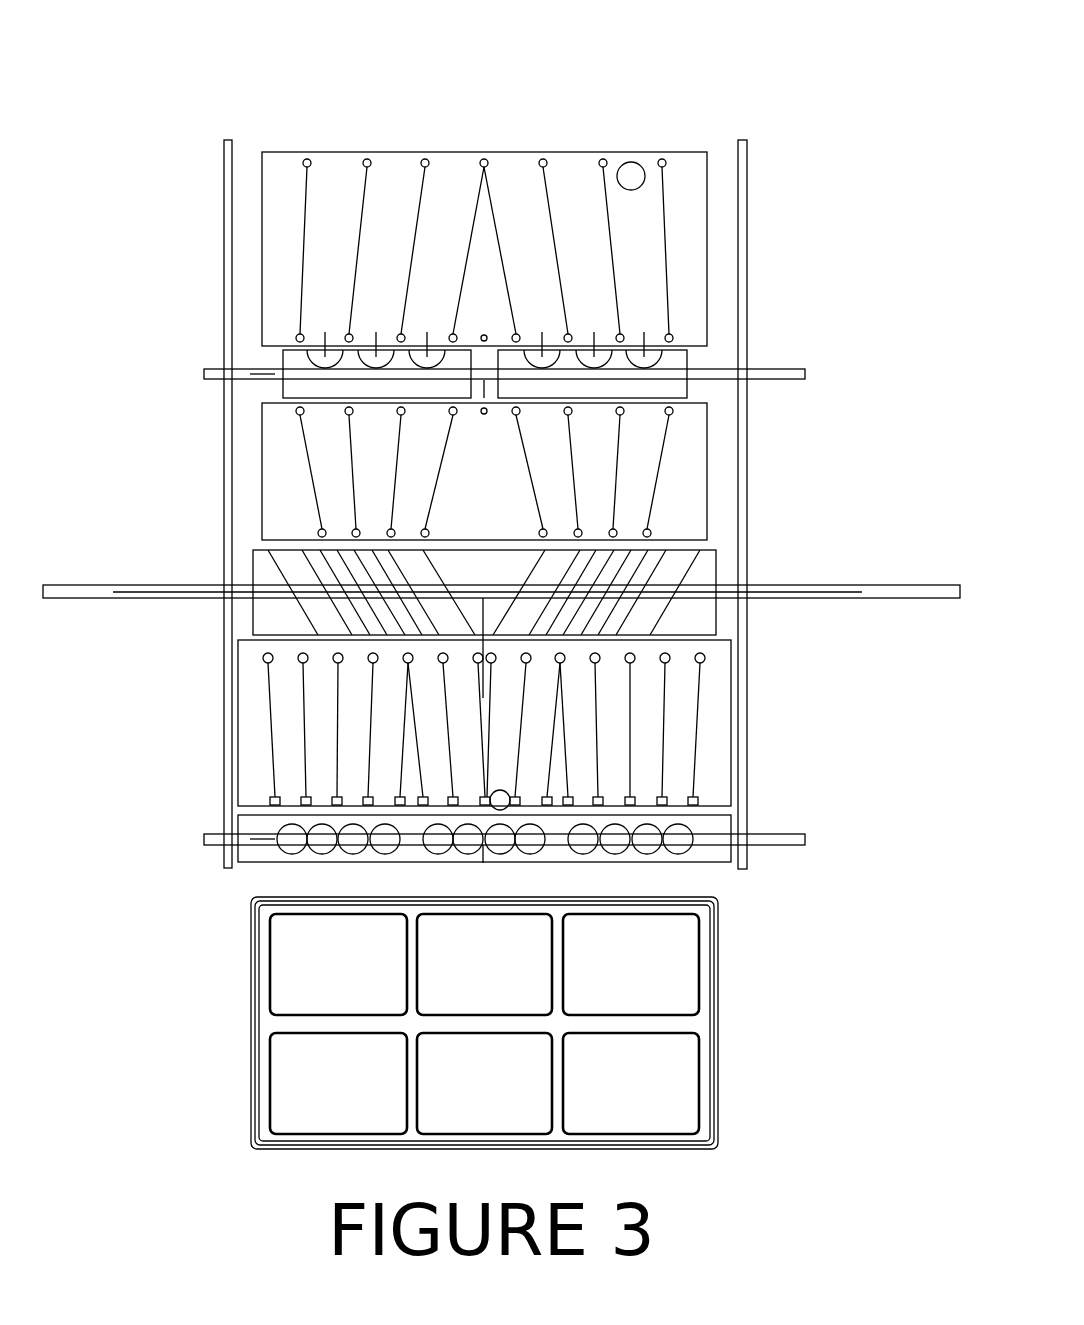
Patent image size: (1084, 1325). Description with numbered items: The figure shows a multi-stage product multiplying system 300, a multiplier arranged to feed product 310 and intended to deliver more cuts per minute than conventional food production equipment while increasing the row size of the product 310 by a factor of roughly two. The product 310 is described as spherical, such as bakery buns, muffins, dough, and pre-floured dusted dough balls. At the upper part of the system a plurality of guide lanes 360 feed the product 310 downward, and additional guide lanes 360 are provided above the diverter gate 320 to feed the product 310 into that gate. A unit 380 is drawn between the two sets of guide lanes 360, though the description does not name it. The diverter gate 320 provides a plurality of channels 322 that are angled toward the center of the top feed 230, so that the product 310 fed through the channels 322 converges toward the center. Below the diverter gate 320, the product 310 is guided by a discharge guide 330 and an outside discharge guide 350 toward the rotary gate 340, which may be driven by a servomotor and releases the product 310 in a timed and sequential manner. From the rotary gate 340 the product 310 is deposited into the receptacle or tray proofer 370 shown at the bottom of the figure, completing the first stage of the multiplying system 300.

The multi-stage product multiplying system 300 is at (485, 435).
The product 310 is at (632, 172).
The guide lanes 360 is at (302, 271).
The collection tray assembly 380 is at (687, 369).
The diverter gate 320 is at (718, 583).
The channels 322 is at (457, 598).
The top feed 230 is at (480, 623).
The outside discharge guide 350 is at (698, 712).
The discharge guide 330 is at (415, 752).
The rotary gate 340 is at (710, 832).
The tray proofer 370 is at (667, 1081).